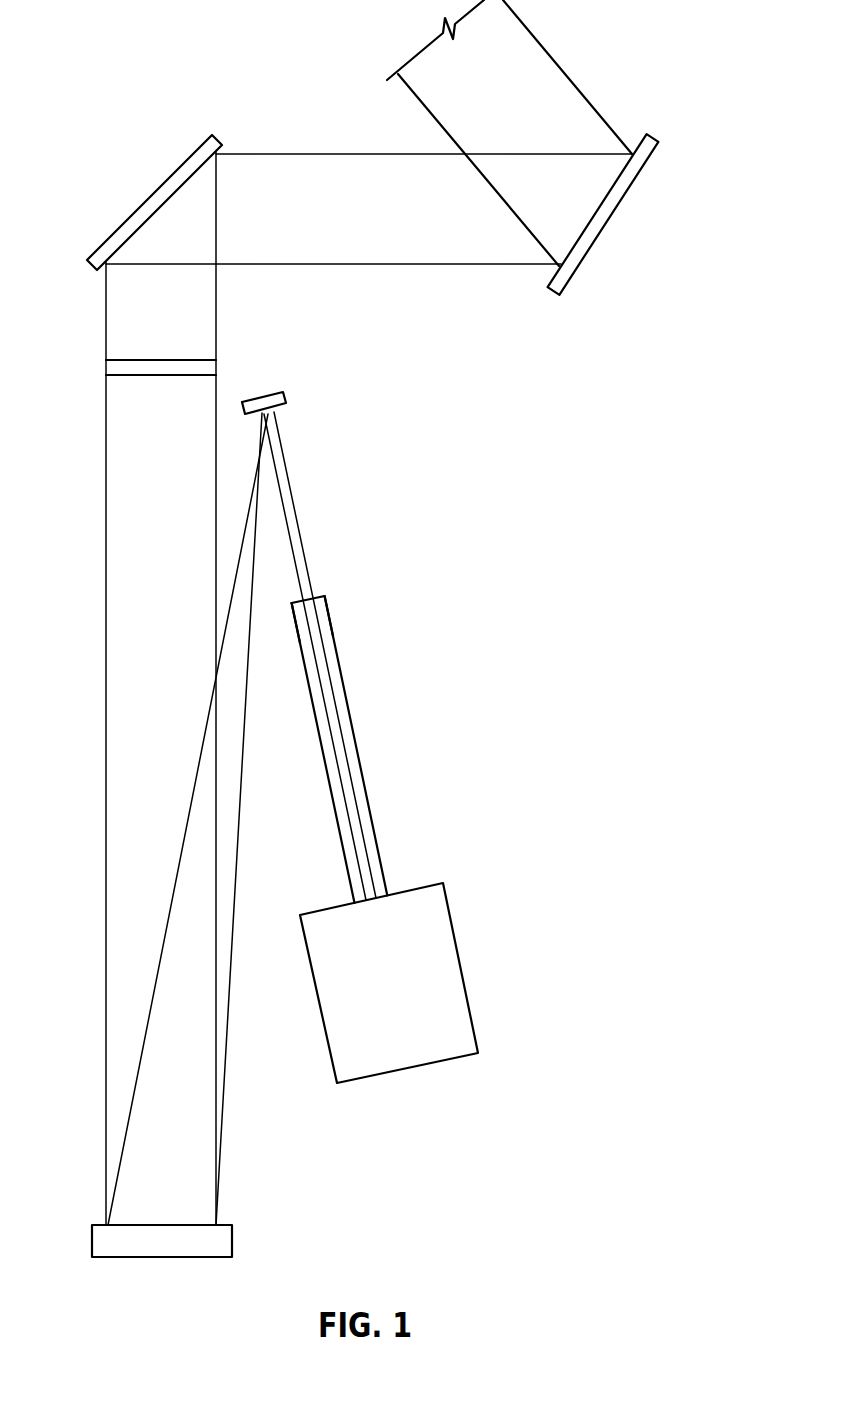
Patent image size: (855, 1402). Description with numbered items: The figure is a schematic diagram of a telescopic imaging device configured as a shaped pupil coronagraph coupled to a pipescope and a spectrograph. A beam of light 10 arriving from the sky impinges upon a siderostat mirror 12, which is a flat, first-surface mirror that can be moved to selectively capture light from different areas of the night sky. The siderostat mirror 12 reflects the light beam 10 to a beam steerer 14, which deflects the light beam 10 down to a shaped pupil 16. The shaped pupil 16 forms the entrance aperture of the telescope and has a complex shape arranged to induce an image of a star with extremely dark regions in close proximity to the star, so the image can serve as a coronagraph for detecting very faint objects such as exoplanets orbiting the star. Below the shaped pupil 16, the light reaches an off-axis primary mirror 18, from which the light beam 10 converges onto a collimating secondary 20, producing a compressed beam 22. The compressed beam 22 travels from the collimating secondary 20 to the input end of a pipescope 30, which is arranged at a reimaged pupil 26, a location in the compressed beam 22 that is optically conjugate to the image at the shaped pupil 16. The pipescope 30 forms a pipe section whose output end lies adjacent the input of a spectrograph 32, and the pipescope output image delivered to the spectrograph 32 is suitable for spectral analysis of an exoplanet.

The beam of light 10 is at (577, 85).
The siderostat mirror 12 is at (613, 217).
The beam steerer 14 is at (148, 195).
The shaped pupil 16 is at (105, 366).
The off-axis primary mirror 18 is at (150, 1258).
The collimating secondary 20 is at (288, 398).
The compressed beam 22 is at (288, 475).
The reimaged pupil 26 is at (322, 597).
The pipescope 30 is at (360, 757).
The spectrograph 32 is at (463, 968).